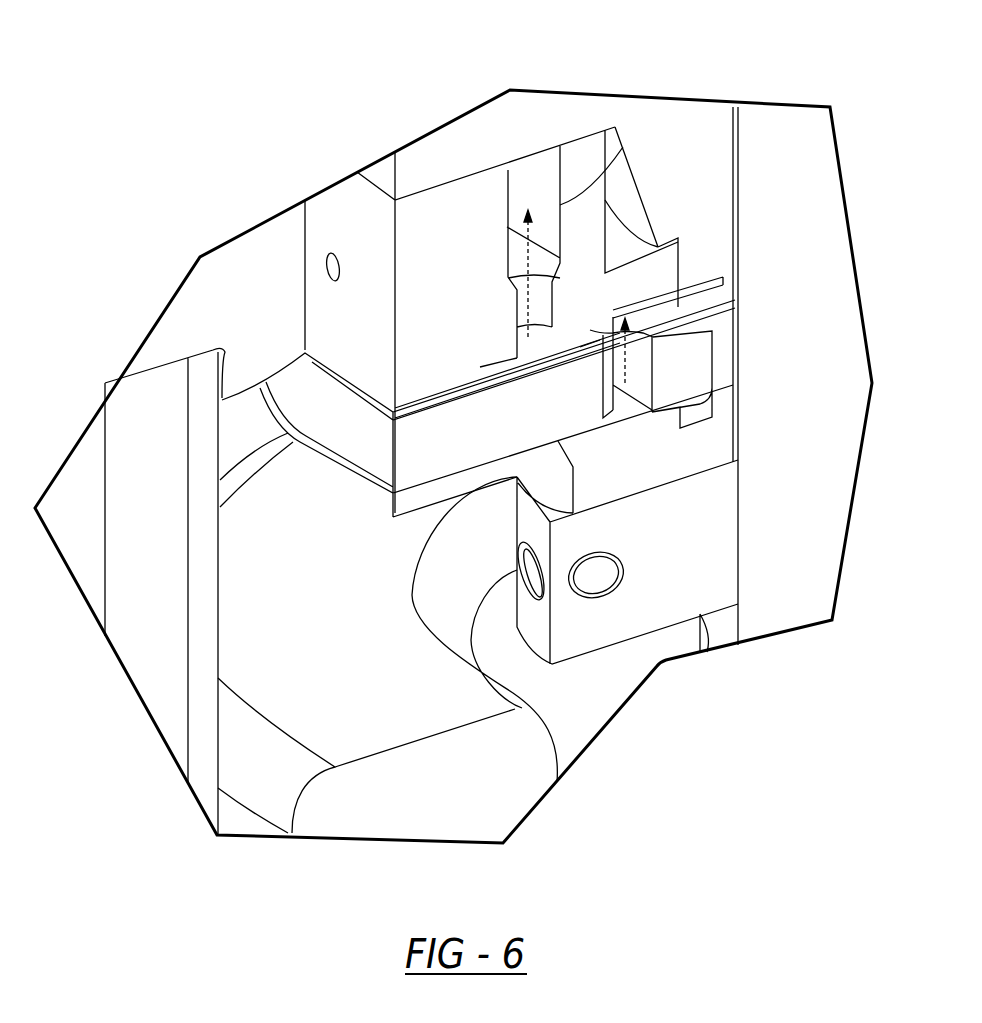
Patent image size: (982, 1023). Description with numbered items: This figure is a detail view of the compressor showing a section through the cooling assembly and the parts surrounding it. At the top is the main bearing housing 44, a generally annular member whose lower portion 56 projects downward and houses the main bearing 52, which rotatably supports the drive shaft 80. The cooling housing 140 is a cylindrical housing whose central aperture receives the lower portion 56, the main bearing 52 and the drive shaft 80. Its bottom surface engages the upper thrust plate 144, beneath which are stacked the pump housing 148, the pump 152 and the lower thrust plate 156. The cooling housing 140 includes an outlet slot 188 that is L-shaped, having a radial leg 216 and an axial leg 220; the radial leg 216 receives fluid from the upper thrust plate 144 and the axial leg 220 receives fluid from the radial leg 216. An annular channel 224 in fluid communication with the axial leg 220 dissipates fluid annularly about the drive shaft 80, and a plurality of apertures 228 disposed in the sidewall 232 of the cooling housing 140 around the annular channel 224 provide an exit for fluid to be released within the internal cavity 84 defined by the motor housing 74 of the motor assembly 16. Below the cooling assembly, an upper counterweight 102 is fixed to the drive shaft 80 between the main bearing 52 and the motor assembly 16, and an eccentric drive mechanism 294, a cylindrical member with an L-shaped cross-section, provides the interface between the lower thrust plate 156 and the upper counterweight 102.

The motor assembly 16 is at (388, 805).
The main bearing housing 44 is at (552, 115).
The main bearing 52 is at (732, 128).
The lower portion 56 is at (692, 152).
The motor housing 74 is at (157, 655).
The drive shaft 80 is at (818, 567).
The internal cavity 84 is at (236, 413).
The upper counterweight 102 is at (655, 597).
The cooling housing 140 is at (453, 222).
The upper thrust plate 144 is at (722, 303).
The pump housing 148 is at (362, 447).
The pump 152 is at (700, 372).
The lower thrust plate 156 is at (378, 492).
The outlet slot 188 is at (656, 307).
The radial leg 216 is at (632, 300).
The axial leg 220 is at (517, 345).
The annular channel 224 is at (623, 147).
The apertures 228 is at (325, 267).
The sidewall 232 is at (360, 213).
The eccentric drive mechanism 294 is at (680, 465).